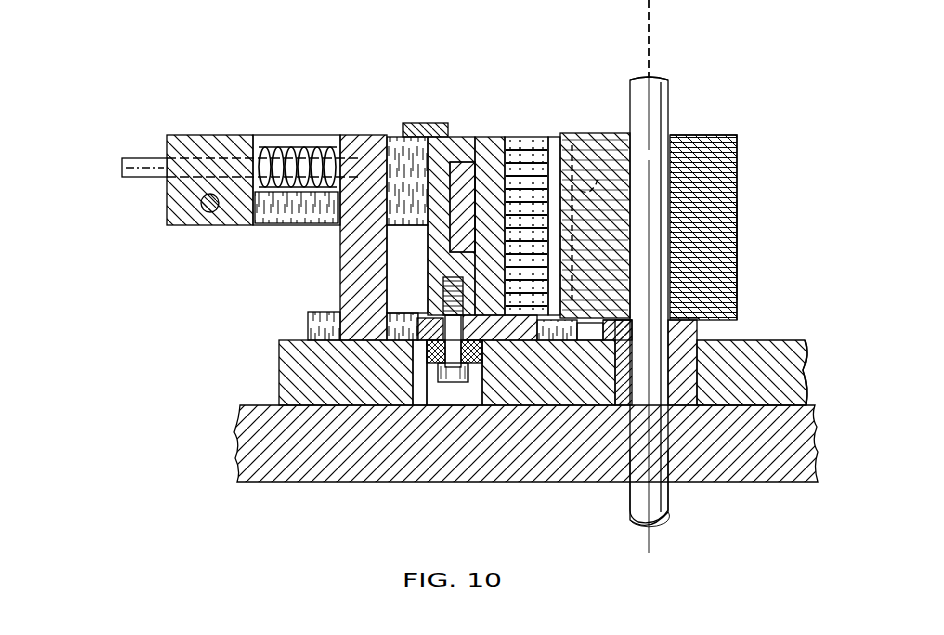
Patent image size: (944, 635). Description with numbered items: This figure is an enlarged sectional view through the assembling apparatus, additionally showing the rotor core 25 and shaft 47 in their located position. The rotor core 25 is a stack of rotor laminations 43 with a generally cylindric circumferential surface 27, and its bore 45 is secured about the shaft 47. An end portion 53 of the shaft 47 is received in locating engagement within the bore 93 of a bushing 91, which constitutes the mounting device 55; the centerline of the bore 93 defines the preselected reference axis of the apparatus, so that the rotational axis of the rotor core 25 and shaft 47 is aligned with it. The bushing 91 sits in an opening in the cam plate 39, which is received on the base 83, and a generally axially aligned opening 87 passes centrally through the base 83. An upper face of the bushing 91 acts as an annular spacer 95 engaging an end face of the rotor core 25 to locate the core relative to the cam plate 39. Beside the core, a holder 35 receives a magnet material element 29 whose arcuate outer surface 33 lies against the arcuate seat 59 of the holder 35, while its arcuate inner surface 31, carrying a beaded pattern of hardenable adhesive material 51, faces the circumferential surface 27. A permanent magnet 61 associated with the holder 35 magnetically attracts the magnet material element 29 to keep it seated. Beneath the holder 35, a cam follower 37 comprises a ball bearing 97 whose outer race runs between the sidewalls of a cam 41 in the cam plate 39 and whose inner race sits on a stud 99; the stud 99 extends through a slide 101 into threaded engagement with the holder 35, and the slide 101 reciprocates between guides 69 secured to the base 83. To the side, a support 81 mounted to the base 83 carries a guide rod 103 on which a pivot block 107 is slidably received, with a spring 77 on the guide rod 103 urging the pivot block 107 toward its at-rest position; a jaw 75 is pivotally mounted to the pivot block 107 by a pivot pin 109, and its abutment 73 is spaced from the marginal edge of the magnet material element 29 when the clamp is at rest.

The rotor core 25 is at (736, 128).
The circumferential surface 27 is at (737, 190).
The magnet material element 29 is at (524, 133).
The arcuate inner surface 31 is at (520, 137).
The arcuate outer surface 33 is at (462, 136).
The holder 35 is at (428, 270).
The cam follower 37 is at (447, 392).
The cam plate 39 is at (842, 350).
The cam 41 is at (470, 398).
The rotor lamination 43 is at (737, 256).
The bore 45 is at (630, 140).
The shaft 47 is at (668, 86).
The hardenable adhesive material 51 is at (547, 258).
The end portion 53 is at (620, 384).
The mounting device 55 is at (698, 364).
The arcuate seat 59 is at (487, 136).
The permanent magnet 61 is at (428, 188).
The guide 69 is at (308, 321).
The abutment 73 is at (595, 225).
The jaw 75 is at (322, 135).
The spring 77 is at (286, 148).
The support 81 is at (340, 265).
The base 83 is at (237, 425).
The opening 87 is at (612, 482).
The bushing 91 is at (699, 340).
The bore 93 is at (632, 333).
The annular spacer 95 is at (690, 319).
The ball bearing 97 is at (482, 356).
The stud 99 is at (480, 380).
The slide 101 is at (546, 296).
The guide rod 103 is at (136, 156).
The pivot block 107 is at (167, 201).
The pivot pin 109 is at (212, 212).